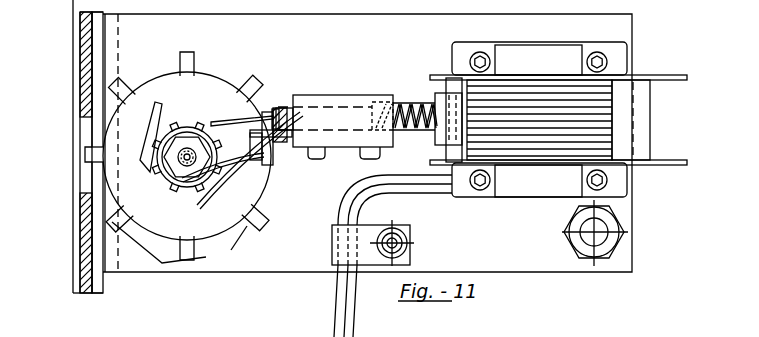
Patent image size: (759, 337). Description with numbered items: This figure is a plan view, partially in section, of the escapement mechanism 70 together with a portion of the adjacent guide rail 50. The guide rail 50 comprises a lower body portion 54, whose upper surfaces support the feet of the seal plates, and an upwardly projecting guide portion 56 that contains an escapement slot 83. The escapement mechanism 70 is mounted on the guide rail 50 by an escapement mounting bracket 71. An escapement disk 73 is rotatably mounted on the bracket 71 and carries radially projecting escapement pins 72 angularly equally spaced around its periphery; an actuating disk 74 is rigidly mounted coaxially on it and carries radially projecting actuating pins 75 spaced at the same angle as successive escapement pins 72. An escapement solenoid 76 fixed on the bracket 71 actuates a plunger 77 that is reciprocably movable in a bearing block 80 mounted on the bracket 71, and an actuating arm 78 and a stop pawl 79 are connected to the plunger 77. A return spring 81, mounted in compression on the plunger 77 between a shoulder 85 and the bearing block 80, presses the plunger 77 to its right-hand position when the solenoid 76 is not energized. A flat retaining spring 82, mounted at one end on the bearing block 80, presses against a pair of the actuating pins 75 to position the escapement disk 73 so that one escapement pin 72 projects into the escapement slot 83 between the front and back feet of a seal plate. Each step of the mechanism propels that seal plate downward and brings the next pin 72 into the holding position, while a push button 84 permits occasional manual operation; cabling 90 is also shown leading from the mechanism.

The guide rail 50 is at (55, 158).
The lower body portion 54 is at (80, 253).
The upwardly projecting guide portion 56 is at (88, 219).
The escapement slot 83 is at (86, 174).
The escapement mechanism 70 is at (665, 228).
The escapement mounting bracket 71 is at (622, 262).
The escapement pins 72 is at (92, 153).
The escapement disk 73 is at (148, 144).
The actuating disk 74 is at (167, 168).
The actuating pins 75 is at (198, 118).
The escapement solenoid 76 is at (600, 90).
The plunger 77 is at (427, 103).
The actuating arm 78 is at (228, 124).
The stop pawl 79 is at (253, 158).
The bearing block 80 is at (315, 95).
The return spring 81 is at (407, 105).
The flat retaining spring 82 is at (209, 190).
The push button 84 is at (585, 241).
The shoulder 85 is at (435, 143).
The cable 90 is at (321, 256).